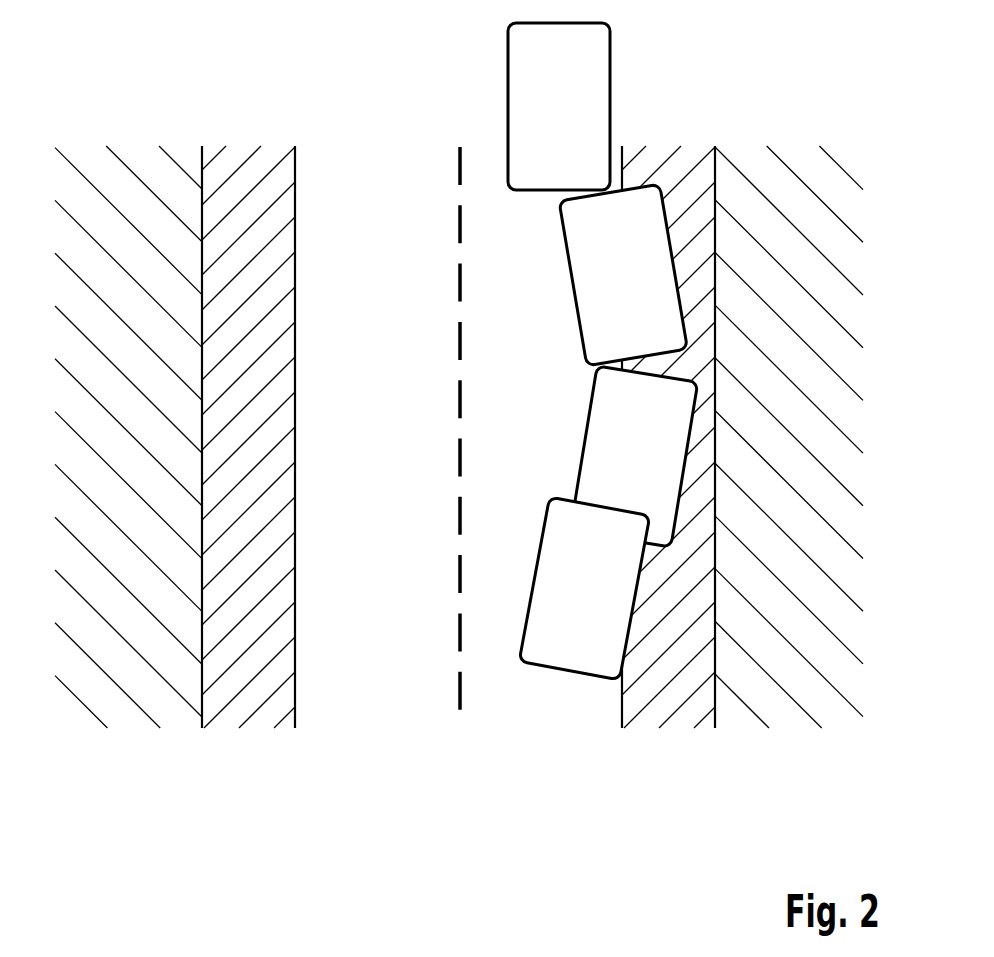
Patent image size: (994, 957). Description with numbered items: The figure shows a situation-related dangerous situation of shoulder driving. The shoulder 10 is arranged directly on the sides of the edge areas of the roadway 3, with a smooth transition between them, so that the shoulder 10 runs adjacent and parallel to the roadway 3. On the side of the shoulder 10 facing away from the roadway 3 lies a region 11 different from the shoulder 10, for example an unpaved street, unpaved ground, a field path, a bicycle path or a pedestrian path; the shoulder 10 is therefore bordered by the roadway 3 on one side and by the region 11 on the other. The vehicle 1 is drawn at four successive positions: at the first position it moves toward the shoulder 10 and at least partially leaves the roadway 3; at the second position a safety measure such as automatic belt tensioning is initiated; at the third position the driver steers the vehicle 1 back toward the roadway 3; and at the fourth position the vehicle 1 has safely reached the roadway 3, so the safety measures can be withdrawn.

The vehicle 1 is at (508, 79).
The roadway 3 is at (383, 724).
The shoulder 10 is at (258, 726).
The region 11 is at (137, 726).